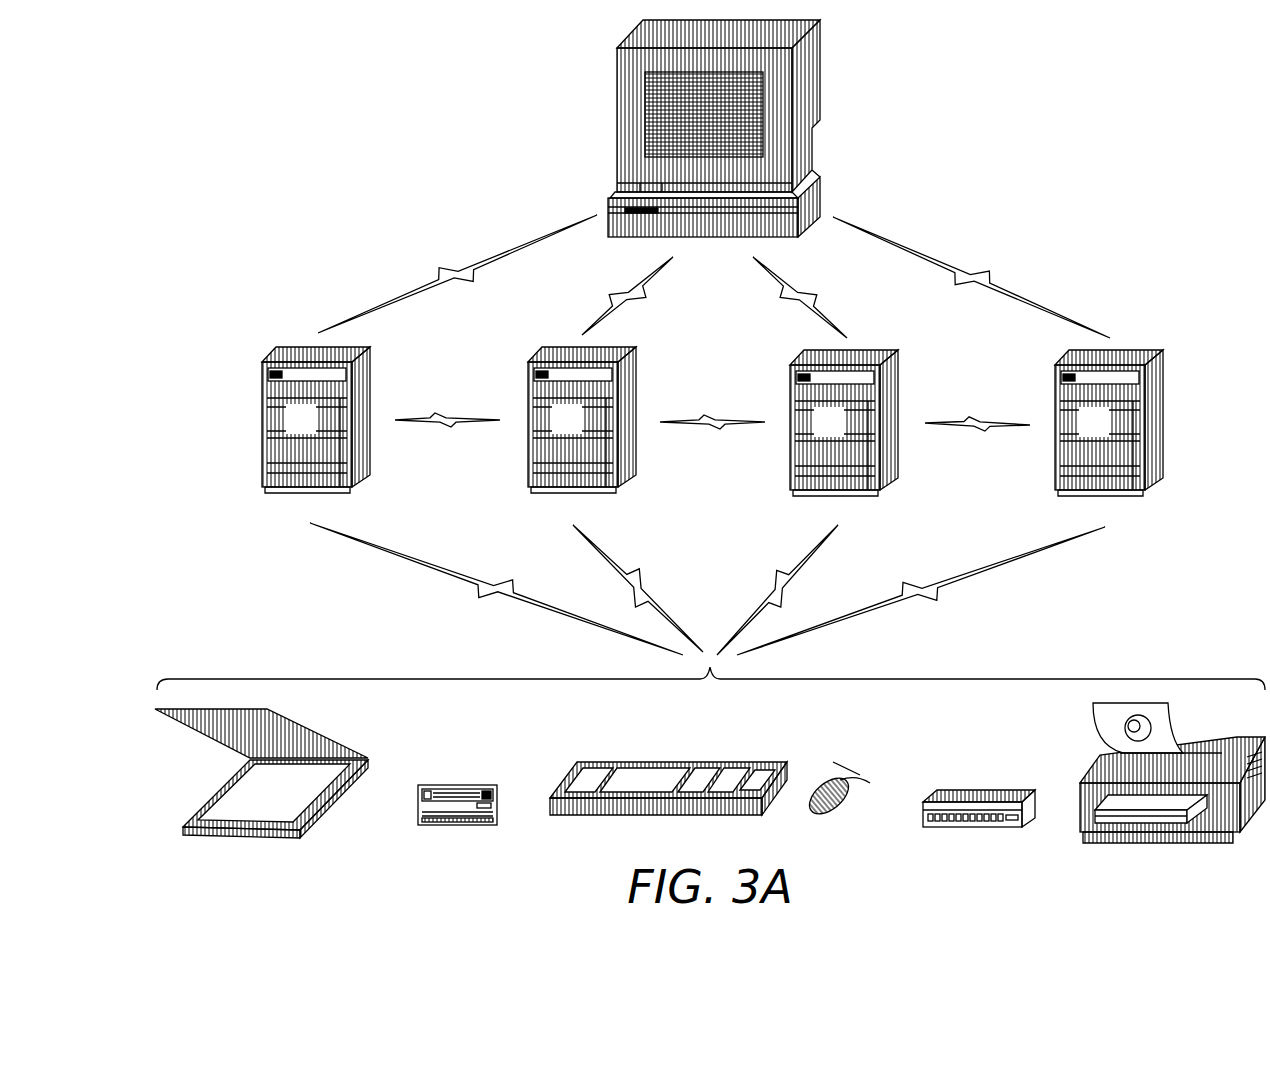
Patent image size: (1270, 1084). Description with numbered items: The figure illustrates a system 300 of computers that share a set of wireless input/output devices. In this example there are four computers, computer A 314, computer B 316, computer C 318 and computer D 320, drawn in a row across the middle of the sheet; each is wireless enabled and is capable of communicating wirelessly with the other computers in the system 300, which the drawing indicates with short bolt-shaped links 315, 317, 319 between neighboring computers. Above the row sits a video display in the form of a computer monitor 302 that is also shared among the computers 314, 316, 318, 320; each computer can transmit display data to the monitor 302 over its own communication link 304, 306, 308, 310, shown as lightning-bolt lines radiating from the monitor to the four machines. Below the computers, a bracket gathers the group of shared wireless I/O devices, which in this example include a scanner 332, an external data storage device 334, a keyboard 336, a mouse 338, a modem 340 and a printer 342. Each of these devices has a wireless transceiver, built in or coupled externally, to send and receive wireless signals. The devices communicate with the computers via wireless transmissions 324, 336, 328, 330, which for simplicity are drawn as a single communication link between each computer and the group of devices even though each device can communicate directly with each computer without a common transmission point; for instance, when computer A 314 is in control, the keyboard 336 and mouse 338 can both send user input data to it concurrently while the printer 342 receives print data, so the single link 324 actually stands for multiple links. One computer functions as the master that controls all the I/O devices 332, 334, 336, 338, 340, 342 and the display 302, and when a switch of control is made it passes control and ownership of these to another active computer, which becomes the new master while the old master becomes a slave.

The system 300 is at (362, 139).
The computer monitor 302 is at (714, 145).
The communication link 304 is at (457, 274).
The communication link 306 is at (627, 298).
The communication link 308 is at (800, 299).
The communication link 310 is at (971, 277).
The computer A 314 is at (316, 435).
The link between server A and B 315 is at (447, 404).
The computer B 316 is at (582, 435).
The link between server B and C 317 is at (712, 407).
The computer C 318 is at (844, 438).
The link between server C and D 319 is at (977, 408).
The computer D 320 is at (1109, 438).
The wireless transmissions 324 is at (496, 589).
The wireless transmissions 328 is at (777, 590).
The wireless transmissions 330 is at (921, 591).
The scanner 332 is at (261, 789).
The external data storage device 334 is at (457, 821).
The keyboard 336 is at (668, 686).
The mouse 338 is at (836, 804).
The modem 340 is at (979, 825).
The printer 342 is at (1172, 788).